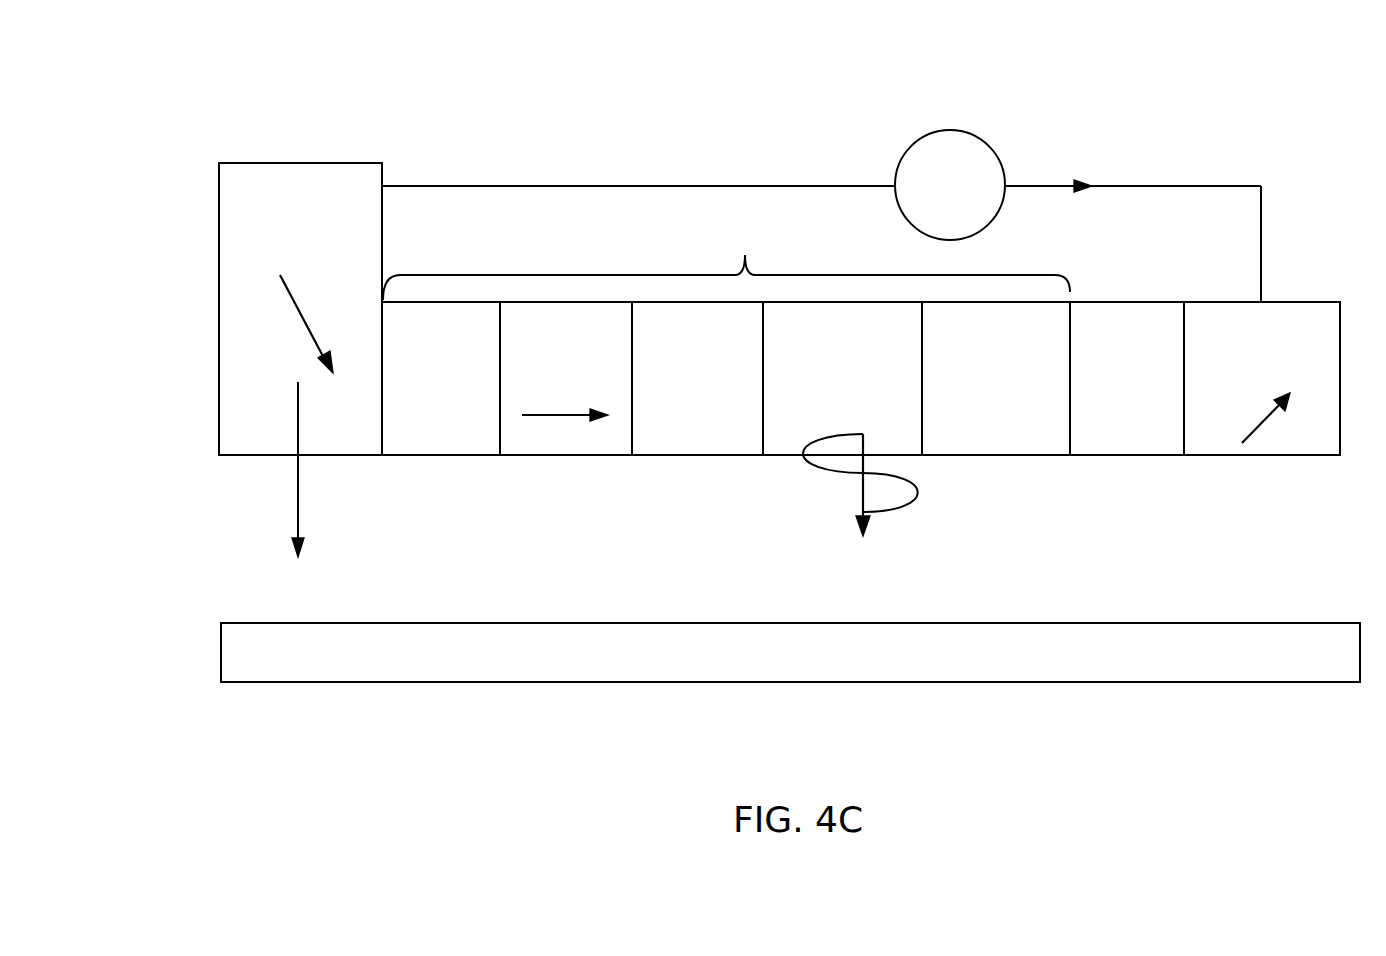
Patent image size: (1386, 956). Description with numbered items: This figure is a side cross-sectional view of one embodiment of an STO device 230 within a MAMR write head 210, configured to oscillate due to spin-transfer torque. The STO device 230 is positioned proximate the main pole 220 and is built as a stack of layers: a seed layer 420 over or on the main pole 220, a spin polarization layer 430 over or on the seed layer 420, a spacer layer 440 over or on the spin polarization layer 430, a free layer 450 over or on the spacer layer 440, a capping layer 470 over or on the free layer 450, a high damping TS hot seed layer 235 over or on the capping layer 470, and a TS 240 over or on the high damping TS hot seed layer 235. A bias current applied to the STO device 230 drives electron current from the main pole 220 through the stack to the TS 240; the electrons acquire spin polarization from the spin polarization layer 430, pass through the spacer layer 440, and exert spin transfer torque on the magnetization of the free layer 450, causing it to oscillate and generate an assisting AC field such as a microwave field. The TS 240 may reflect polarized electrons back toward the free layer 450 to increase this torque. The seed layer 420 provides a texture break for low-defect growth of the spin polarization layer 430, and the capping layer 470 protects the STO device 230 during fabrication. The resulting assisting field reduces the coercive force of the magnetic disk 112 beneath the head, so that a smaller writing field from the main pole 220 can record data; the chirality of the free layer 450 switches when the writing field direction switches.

The MAMR write head 210 is at (316, 78).
The main pole 220 is at (275, 252).
The STO device 230 is at (726, 262).
The seed layer 420 is at (441, 378).
The spin polarization layer 430 is at (566, 378).
The spacer layer 440 is at (697, 378).
The free layer 450 is at (910, 437).
The capping layer 470 is at (996, 378).
The high damping TS hot seed layer 235 is at (1127, 378).
The trailing shield 240 is at (1262, 378).
The magnetic disk 112 is at (790, 652).